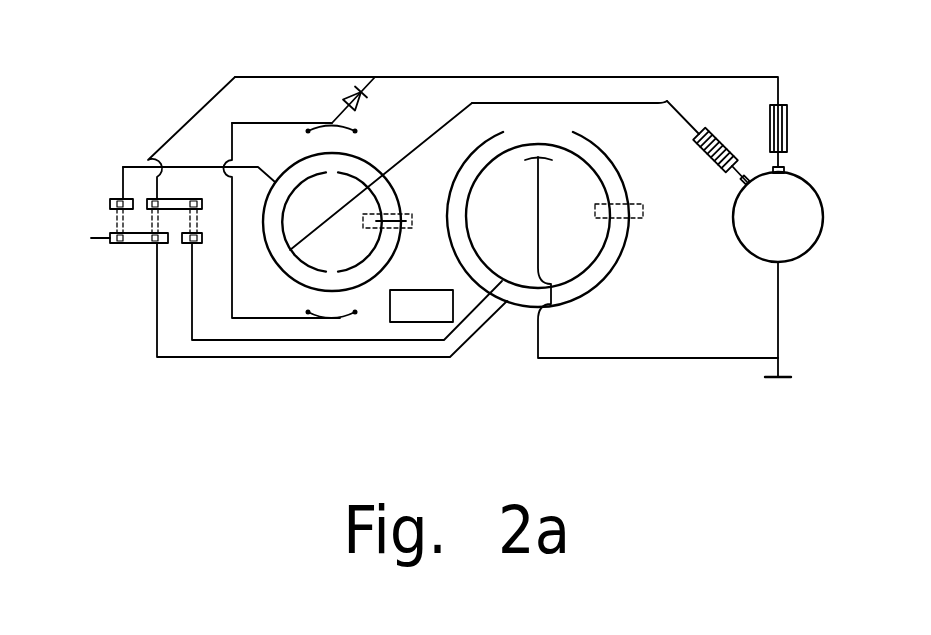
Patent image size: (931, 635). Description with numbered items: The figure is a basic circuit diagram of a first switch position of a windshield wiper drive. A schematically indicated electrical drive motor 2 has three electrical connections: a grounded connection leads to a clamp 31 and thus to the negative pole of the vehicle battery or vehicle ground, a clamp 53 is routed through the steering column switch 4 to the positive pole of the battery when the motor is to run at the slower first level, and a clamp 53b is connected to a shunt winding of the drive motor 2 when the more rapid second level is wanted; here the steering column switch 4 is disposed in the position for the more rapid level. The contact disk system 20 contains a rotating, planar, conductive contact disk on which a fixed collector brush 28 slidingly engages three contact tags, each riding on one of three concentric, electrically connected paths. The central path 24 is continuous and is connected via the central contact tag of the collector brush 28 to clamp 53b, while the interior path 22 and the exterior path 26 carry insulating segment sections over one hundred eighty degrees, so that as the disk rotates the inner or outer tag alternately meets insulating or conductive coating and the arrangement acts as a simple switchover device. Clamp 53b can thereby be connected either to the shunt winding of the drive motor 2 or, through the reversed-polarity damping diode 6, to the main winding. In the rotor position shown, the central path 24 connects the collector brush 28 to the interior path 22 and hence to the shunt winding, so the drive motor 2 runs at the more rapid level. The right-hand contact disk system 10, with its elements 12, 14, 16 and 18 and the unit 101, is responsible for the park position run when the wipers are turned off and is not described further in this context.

The electrical drive motor 2 is at (797, 240).
The steering column switch 4 is at (138, 143).
The reversed-polarity damping diode 6 is at (355, 110).
The right-hand contact disk system 10 is at (612, 279).
The ground contact 12 is at (531, 161).
The inner slip ring 14 is at (583, 266).
The outer slip ring 16 is at (616, 158).
The brush 18 is at (645, 208).
The contact disk system 20 is at (356, 279).
The interior path 22 is at (306, 262).
The central path 24 is at (395, 260).
The exterior path 26 is at (362, 127).
The collector brush 28 is at (404, 216).
The clamp 31 is at (779, 338).
The clamp 53 is at (577, 76).
The clamp 53b is at (668, 101).
The control unit 101 is at (453, 312).